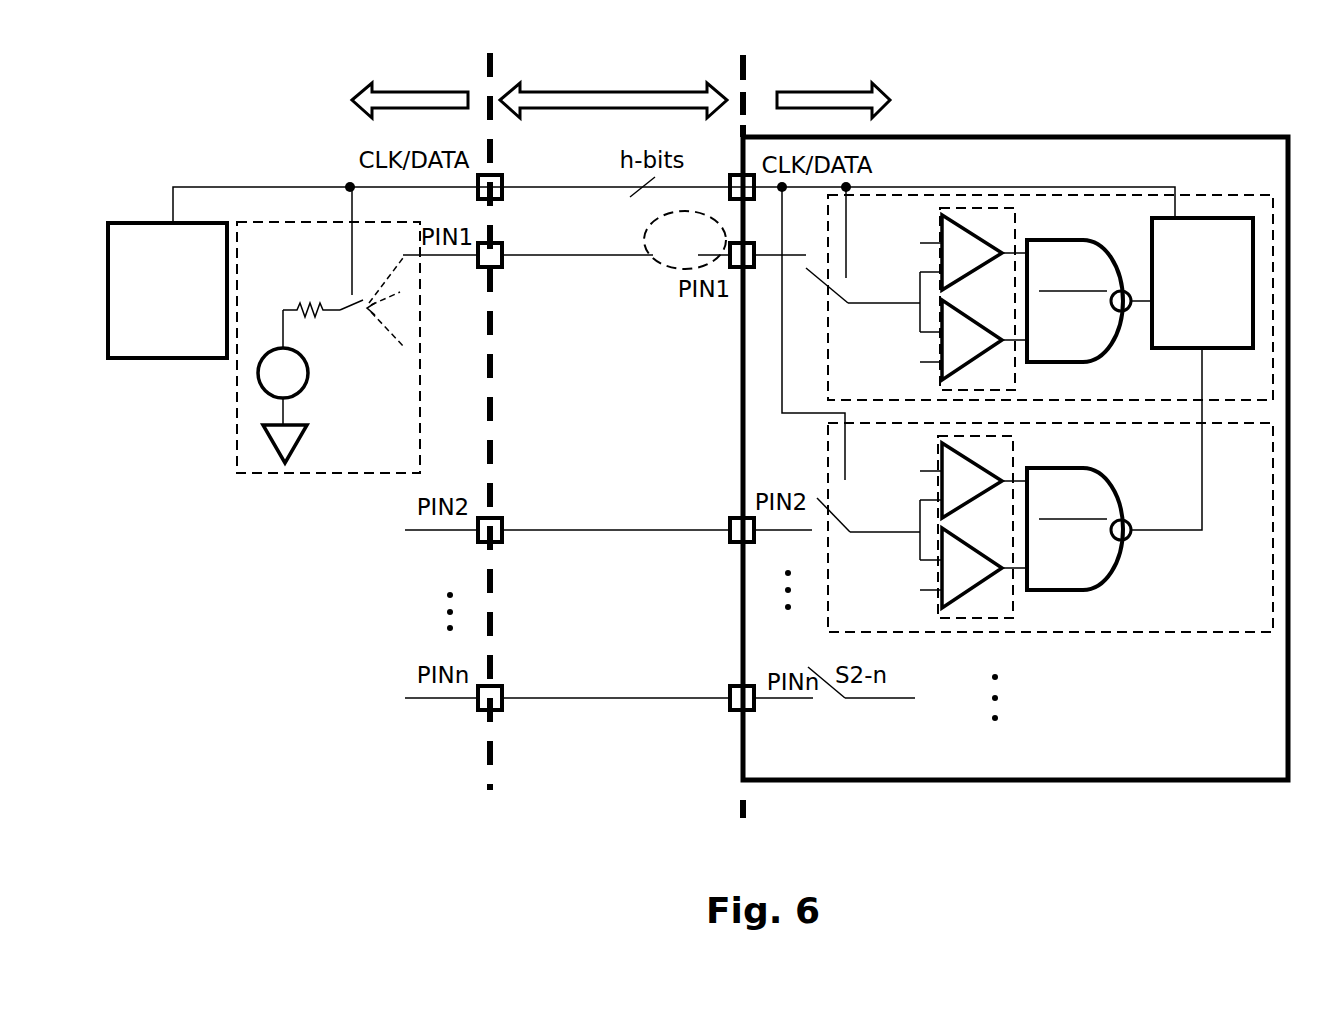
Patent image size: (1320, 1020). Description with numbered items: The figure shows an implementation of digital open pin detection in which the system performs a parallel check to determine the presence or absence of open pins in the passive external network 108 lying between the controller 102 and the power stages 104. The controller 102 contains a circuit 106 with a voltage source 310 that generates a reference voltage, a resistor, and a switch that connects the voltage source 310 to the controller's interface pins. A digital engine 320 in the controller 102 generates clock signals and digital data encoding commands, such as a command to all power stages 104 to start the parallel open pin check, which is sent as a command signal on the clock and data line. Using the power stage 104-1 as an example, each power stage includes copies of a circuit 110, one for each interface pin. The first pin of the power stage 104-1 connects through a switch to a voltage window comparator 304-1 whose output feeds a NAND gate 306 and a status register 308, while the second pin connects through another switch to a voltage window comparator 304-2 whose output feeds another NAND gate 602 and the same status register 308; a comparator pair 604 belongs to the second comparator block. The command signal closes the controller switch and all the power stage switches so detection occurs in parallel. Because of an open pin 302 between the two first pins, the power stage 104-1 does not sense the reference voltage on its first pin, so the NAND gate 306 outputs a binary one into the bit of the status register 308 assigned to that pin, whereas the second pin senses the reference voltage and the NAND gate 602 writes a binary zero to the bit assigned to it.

The controller 102 is at (376, 84).
The passive external network 108 is at (613, 67).
The power stages 104 is at (881, 81).
The power stage 104-1 is at (1267, 177).
The circuit 106 is at (252, 264).
The circuit 110 is at (1079, 397).
The open pin 302 is at (648, 238).
The voltage window comparator 304-1 is at (995, 208).
The voltage window comparator 304-2 is at (1045, 561).
The NAND gate 306 is at (1051, 324).
The status register 308 is at (1202, 283).
The voltage source 310 is at (257, 373).
The digital engine 320 is at (167, 290).
The NAND gate 602 is at (1051, 554).
The comparator pair 604 is at (983, 618).